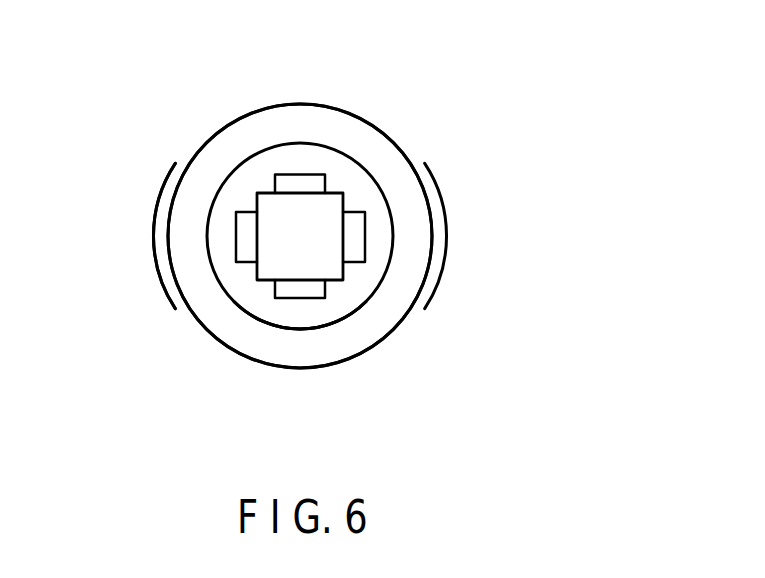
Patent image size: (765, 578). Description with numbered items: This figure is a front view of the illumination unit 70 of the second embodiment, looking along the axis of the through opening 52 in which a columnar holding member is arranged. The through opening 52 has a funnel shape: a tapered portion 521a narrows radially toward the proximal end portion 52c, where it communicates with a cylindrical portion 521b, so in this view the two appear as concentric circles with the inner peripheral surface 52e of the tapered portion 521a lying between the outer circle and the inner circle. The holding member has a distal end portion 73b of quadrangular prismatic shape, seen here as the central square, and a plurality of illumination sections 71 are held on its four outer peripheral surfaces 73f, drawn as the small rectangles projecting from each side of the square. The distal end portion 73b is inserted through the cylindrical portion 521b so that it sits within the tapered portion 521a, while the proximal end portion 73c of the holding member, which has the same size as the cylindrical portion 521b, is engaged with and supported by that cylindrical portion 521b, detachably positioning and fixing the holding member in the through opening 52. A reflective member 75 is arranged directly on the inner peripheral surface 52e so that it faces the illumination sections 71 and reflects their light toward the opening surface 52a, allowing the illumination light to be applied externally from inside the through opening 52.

The illumination unit 70 is at (146, 123).
The through opening 52 is at (278, 105).
The opening surface 52a is at (216, 278).
The proximal end portion 52c is at (278, 326).
The inner peripheral surface 52e is at (407, 290).
The tapered portion 521a is at (188, 260).
The cylindrical portion 521b is at (278, 326).
The illumination section 71 is at (306, 174).
The distal end portion 73b is at (323, 207).
The proximal end portion 73c is at (236, 292).
The outer peripheral surface 73f is at (338, 280).
The reflective member 75 is at (188, 221).